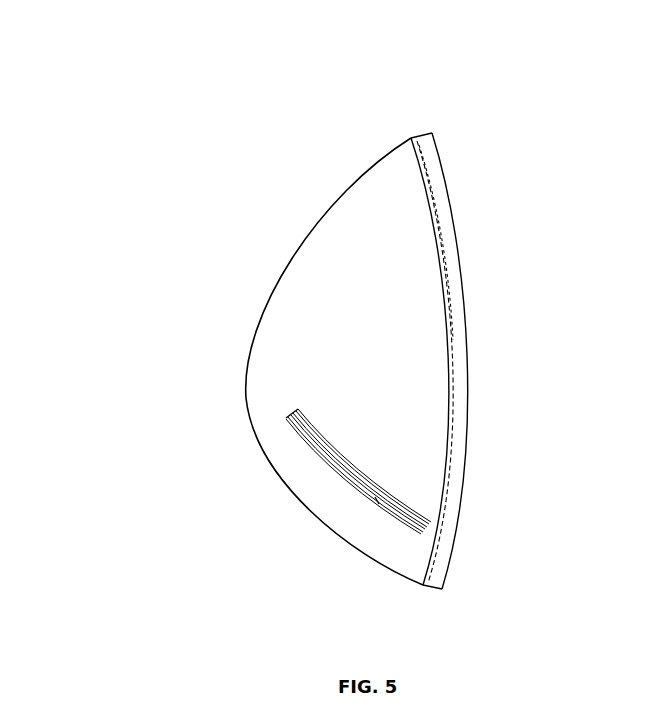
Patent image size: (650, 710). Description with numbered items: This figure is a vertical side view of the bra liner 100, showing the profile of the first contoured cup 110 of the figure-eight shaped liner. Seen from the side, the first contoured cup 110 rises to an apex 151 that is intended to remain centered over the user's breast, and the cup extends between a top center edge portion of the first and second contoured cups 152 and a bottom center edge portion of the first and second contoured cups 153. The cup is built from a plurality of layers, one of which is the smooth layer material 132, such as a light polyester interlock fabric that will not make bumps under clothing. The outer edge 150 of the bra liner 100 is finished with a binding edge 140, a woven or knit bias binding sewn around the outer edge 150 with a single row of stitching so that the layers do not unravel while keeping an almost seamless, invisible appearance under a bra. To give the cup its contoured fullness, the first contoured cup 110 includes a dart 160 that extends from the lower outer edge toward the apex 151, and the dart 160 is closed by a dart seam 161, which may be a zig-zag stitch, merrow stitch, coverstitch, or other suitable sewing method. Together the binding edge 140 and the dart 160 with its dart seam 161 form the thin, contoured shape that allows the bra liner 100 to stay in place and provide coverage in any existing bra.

The bra liner 100 is at (76, 202).
The first contoured cup 110 is at (333, 276).
The smooth layer material 132 is at (393, 320).
The binding edge 140 is at (458, 310).
The outer edge 150 is at (443, 440).
The apex 151 is at (284, 413).
The top center edge portion of the first and second contoured cups 152 is at (410, 138).
The bottom center edge portion of the first and second contoured cups 153 is at (423, 585).
The dart 160 is at (335, 478).
The dart seam 161 is at (378, 500).